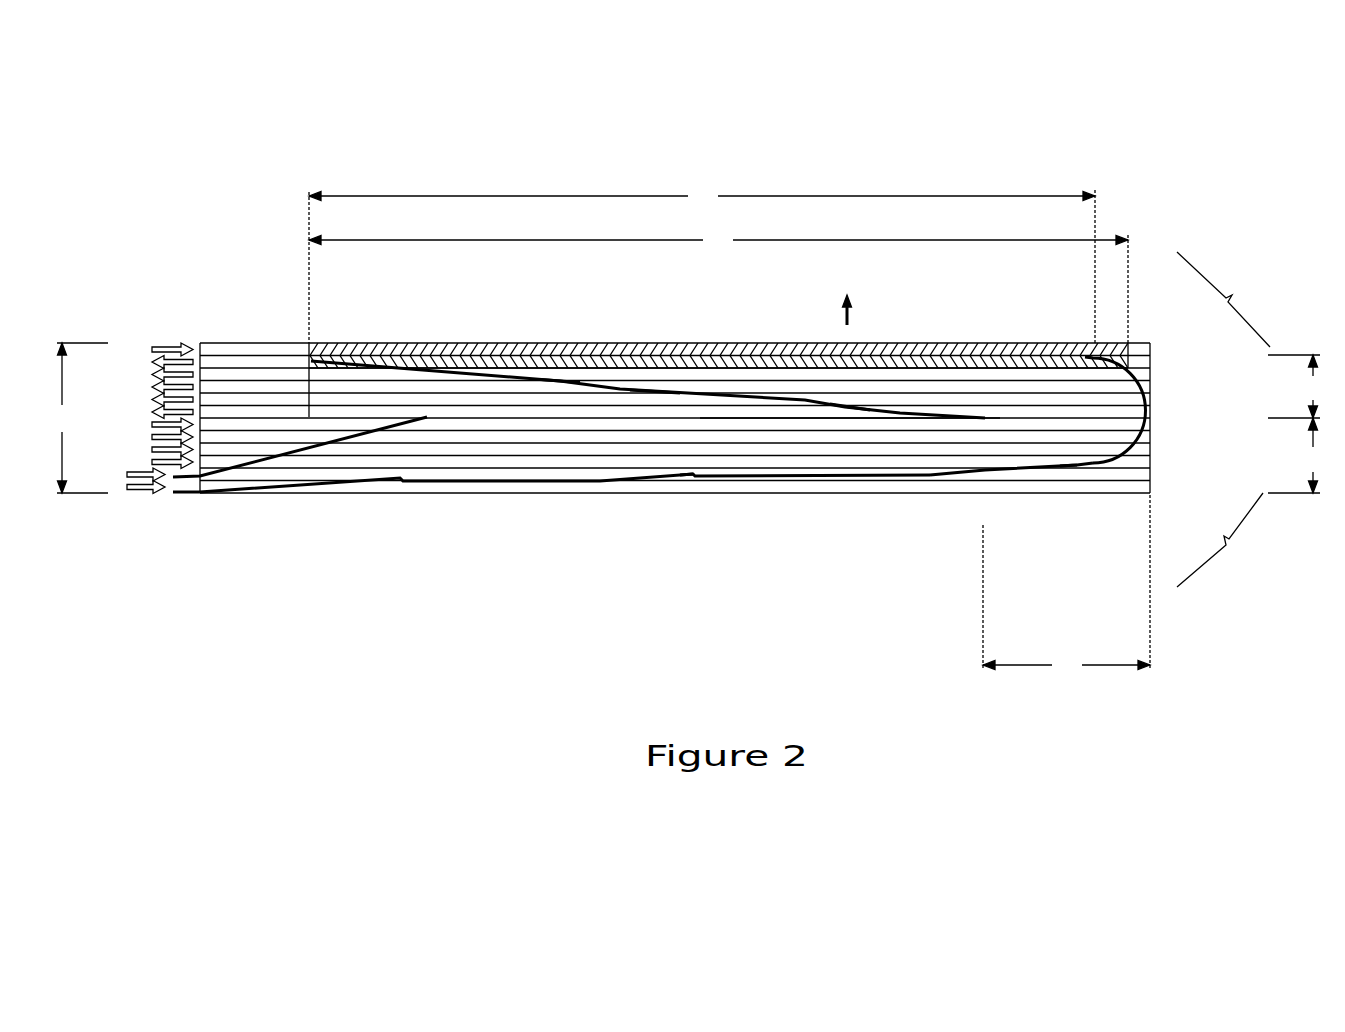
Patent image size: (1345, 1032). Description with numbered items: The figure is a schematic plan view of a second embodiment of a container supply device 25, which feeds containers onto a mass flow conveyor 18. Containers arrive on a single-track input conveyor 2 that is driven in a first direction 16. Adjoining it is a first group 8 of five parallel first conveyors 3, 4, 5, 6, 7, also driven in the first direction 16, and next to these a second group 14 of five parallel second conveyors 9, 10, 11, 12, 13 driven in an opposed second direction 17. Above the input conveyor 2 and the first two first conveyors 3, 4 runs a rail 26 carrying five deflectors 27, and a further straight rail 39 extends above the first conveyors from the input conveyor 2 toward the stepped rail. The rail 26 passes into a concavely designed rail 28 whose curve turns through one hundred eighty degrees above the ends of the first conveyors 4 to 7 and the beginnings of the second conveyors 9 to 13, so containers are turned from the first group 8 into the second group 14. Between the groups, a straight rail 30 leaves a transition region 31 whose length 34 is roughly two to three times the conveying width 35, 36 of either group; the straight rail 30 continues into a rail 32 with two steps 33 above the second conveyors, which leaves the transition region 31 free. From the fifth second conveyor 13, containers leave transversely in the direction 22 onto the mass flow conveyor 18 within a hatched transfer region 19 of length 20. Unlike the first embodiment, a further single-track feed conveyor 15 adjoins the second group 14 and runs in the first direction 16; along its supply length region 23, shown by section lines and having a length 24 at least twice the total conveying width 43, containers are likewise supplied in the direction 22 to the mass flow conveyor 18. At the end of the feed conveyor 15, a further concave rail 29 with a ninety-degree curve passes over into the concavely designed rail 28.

The single-track input conveyor 2 is at (1137, 495).
The first conveyor 3 is at (1150, 470).
The first conveyor 4 is at (1150, 457).
The first conveyor 5 is at (1150, 446).
The first conveyor 6 is at (1150, 434).
The first conveyor 7 is at (1150, 422).
The first group 8 is at (1220, 540).
The second conveyor 9 is at (1150, 413).
The second conveyor 10 is at (1150, 401).
The second conveyor 11 is at (1150, 391).
The second conveyor 12 is at (1150, 381).
The second conveyor 13 is at (1150, 370).
The second group 14 is at (1223, 299).
The further single-track feed conveyor 15 is at (1150, 355).
The first direction 16 is at (150, 348).
The second direction 17 is at (143, 357).
The mass flow conveyor 18 is at (1030, 330).
The transfer region 19 is at (621, 352).
The length 20 is at (702, 196).
The direction 22 is at (853, 310).
The supply length region 23 is at (698, 345).
The length 24 is at (718, 240).
The container supply device 25 is at (177, 197).
The rail 26 is at (604, 492).
The deflector 27 is at (270, 491).
The concavely designed rail 28 is at (1097, 482).
The further concave rail 29 is at (1115, 346).
The straight rail 30 is at (805, 430).
The transition region 31 is at (1045, 426).
The rail with two steps 32 is at (652, 404).
The step 33 is at (561, 383).
The length 34 is at (1066, 588).
The conveying width 35 is at (1294, 455).
The conveying width 36 is at (1294, 386).
The further straight rail 39 is at (292, 445).
The conveying width 43 is at (78, 418).